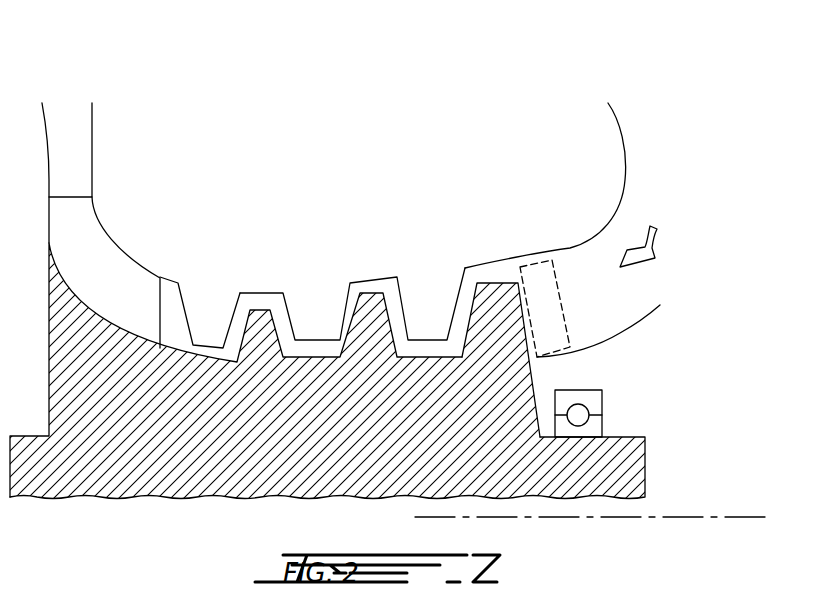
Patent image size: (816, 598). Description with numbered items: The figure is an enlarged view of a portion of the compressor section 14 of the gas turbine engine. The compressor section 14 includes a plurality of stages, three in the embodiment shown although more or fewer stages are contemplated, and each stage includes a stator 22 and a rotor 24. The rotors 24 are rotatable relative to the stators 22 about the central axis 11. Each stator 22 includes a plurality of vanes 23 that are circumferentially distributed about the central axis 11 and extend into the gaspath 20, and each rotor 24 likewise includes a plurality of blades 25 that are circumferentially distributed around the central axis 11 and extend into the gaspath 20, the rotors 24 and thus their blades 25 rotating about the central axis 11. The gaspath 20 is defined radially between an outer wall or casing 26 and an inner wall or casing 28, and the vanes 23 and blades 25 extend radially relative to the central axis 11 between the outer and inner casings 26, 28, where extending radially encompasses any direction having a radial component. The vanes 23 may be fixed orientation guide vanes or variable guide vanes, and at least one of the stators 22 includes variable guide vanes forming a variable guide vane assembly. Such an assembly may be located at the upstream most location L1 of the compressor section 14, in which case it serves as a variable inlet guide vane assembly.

The compressor section 14 is at (297, 126).
The gaspath 20 is at (97, 270).
The stator 22 is at (312, 305).
The vanes 23 is at (207, 310).
The rotor 24 is at (478, 310).
The blades 25 is at (497, 310).
The outer wall or casing 26 is at (569, 247).
The inner wall or casing 28 is at (620, 335).
The upstream most location L1 is at (556, 280).
The central axis 11 is at (687, 515).